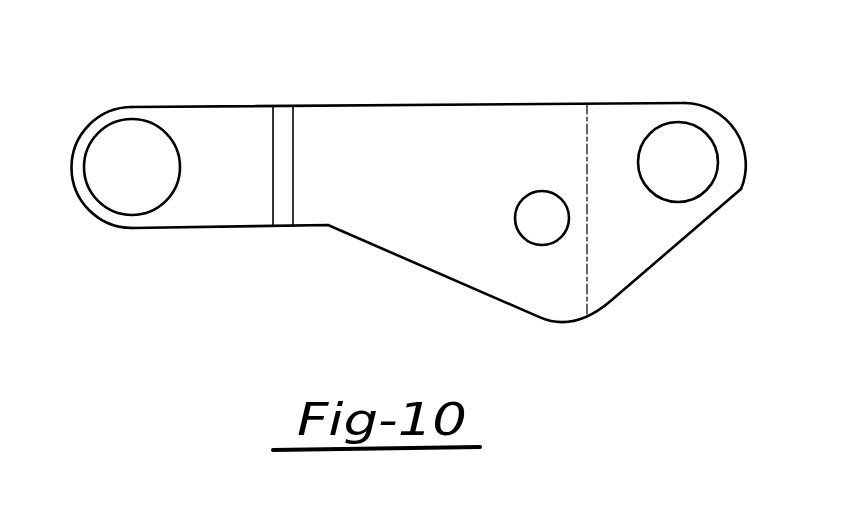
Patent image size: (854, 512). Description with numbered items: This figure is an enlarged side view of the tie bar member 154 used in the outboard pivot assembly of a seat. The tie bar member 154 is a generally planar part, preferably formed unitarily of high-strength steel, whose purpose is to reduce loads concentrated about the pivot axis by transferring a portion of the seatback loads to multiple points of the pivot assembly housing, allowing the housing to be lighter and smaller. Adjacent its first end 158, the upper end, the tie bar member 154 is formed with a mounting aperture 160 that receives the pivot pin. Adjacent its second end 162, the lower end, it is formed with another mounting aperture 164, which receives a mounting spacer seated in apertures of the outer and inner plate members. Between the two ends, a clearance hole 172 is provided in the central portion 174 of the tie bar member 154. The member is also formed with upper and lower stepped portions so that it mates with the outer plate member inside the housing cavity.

The tie bar member 154 is at (222, 87).
The first end 158 is at (702, 115).
The mounting aperture 160 is at (701, 190).
The second end 162 is at (82, 142).
The mounting aperture 164 is at (135, 214).
The clearance hole 172 is at (541, 243).
The central portion 174 is at (485, 158).